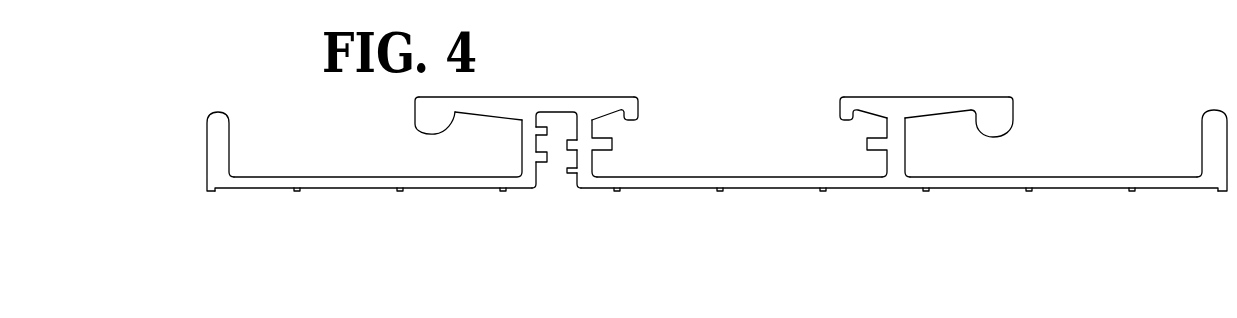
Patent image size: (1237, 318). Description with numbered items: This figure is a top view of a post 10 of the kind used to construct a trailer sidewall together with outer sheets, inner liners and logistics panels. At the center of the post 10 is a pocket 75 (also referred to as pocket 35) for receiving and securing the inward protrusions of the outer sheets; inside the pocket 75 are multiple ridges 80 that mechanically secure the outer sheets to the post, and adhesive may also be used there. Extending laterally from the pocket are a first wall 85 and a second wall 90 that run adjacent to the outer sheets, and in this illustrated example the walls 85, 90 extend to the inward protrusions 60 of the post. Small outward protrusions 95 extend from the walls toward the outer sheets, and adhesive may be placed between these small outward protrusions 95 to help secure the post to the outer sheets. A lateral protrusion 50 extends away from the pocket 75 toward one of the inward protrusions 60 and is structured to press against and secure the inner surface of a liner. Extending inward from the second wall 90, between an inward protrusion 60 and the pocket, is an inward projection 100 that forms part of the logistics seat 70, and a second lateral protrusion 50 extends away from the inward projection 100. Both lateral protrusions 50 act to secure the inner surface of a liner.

The post 10 is at (840, 72).
The pocket 35 is at (560, 140).
The lateral protrusion 50 is at (441, 112).
The inward protrusion 60 is at (214, 125).
The logistics seat 70 is at (610, 125).
The pocket 75 is at (563, 103).
The ridges 80 is at (543, 163).
The first wall 85 is at (330, 184).
The second wall 90 is at (1048, 182).
The small outward protrusions 95 is at (400, 190).
The inward projection 100 is at (897, 110).